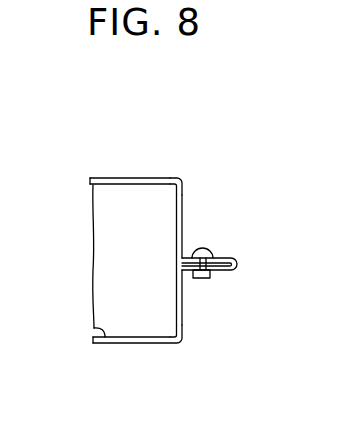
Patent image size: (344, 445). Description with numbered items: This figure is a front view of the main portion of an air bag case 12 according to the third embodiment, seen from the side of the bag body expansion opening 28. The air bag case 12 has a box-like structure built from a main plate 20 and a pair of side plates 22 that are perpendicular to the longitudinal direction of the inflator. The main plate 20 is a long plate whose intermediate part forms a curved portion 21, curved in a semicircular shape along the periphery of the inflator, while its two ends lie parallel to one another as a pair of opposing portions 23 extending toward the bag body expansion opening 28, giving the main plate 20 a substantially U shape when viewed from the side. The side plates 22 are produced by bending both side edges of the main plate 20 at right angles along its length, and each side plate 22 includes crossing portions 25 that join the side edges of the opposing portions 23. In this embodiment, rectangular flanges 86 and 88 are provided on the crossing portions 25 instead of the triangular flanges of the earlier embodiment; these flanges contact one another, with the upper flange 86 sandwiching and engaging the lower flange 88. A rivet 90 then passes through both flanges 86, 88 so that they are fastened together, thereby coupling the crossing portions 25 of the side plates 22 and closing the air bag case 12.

The air bag case 12 is at (185, 179).
The main plate 20 is at (108, 179).
The curved portion 21 is at (131, 306).
The side plates 22 is at (186, 311).
The opposing portions 23 is at (142, 178).
The crossing portions 25 is at (176, 238).
The bag body expansion opening 28 is at (94, 330).
The flange 86 is at (226, 258).
The flange 88 is at (215, 273).
The rivet 90 is at (200, 246).